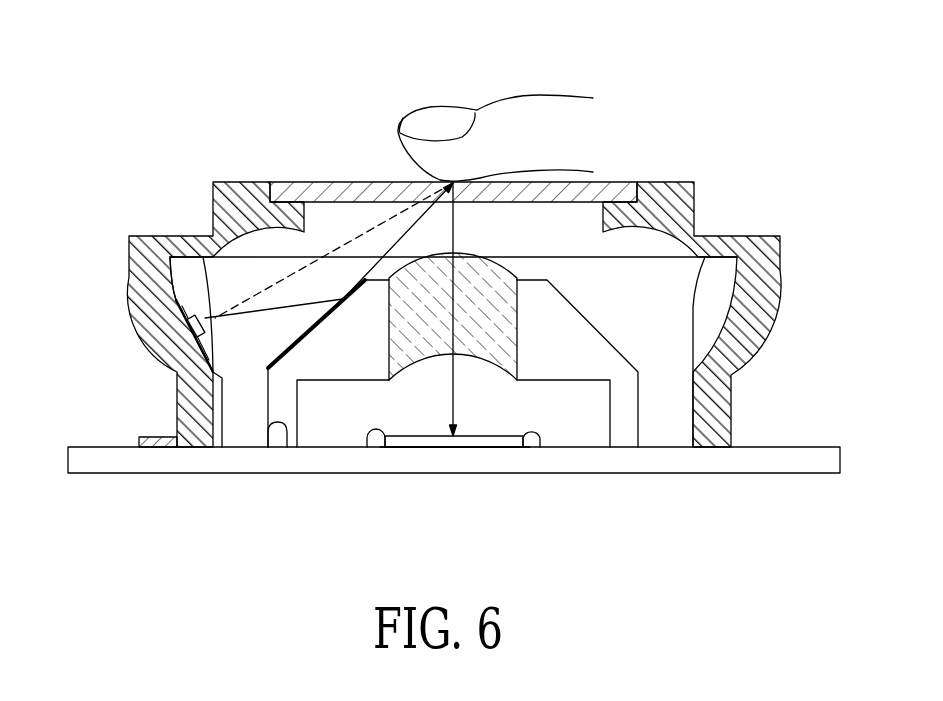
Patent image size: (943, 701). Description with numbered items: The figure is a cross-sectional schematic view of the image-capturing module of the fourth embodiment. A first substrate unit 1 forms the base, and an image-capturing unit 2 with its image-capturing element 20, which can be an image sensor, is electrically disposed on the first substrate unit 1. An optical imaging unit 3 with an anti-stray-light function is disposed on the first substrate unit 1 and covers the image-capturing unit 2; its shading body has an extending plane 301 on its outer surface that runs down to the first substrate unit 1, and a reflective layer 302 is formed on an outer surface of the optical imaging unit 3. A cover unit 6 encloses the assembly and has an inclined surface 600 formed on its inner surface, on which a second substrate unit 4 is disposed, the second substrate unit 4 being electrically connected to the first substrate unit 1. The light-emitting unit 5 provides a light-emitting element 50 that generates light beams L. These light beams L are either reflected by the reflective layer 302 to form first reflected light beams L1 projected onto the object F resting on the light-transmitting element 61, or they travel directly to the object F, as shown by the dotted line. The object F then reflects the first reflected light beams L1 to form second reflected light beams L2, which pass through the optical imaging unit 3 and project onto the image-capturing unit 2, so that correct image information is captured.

The first substrate unit 1 is at (806, 447).
The image-capturing unit 2 is at (485, 448).
The optical imaging unit 3 is at (597, 368).
The second substrate unit 4 is at (173, 448).
The light-emitting unit 5 is at (188, 318).
The cover unit 6 is at (131, 234).
The image-capturing element 20 is at (414, 441).
The light-emitting element 50 is at (172, 344).
The light-transmitting element 61 is at (300, 183).
The extending plane 301 is at (282, 434).
The reflective layer 302 is at (305, 338).
The inclined surface 600 is at (172, 273).
The object F is at (535, 91).
The light beams L is at (360, 235).
The first reflected light beams L1 is at (403, 236).
The second reflected light beams L2 is at (455, 228).